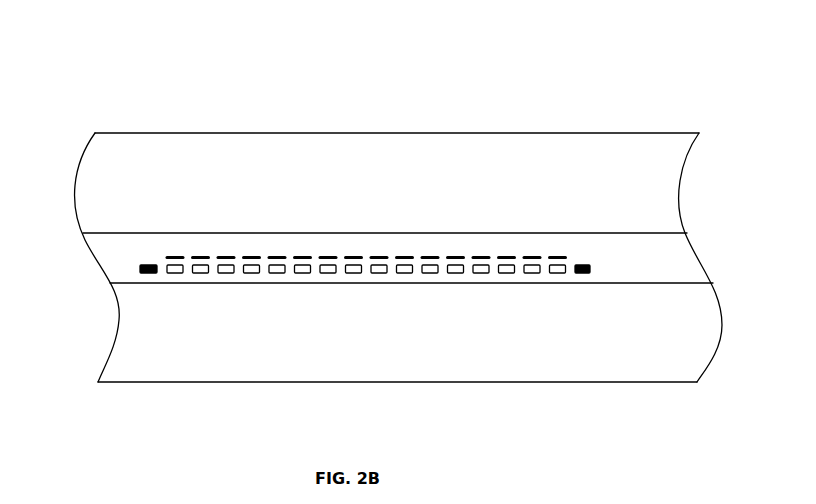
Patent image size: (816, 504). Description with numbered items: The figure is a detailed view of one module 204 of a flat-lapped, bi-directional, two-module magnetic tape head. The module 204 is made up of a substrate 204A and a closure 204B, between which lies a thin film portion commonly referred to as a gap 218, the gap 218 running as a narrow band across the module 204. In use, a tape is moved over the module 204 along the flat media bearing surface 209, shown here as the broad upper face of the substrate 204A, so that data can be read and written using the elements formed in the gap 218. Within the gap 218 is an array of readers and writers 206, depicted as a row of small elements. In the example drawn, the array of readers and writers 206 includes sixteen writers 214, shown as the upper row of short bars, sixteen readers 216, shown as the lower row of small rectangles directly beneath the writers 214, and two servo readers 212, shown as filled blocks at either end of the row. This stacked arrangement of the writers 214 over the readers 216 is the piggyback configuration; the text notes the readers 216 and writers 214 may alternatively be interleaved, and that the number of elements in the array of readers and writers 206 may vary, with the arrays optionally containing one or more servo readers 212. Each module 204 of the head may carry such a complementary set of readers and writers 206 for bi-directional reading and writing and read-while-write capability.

The module 204 is at (110, 115).
The substrate 204A is at (195, 133).
The closure 204B is at (248, 382).
The readers and writers 206 is at (604, 257).
The media bearing surface 209 is at (325, 200).
The servo readers 212 is at (141, 268).
The writers 214 is at (480, 256).
The readers 216 is at (481, 273).
The gap 218 is at (700, 255).